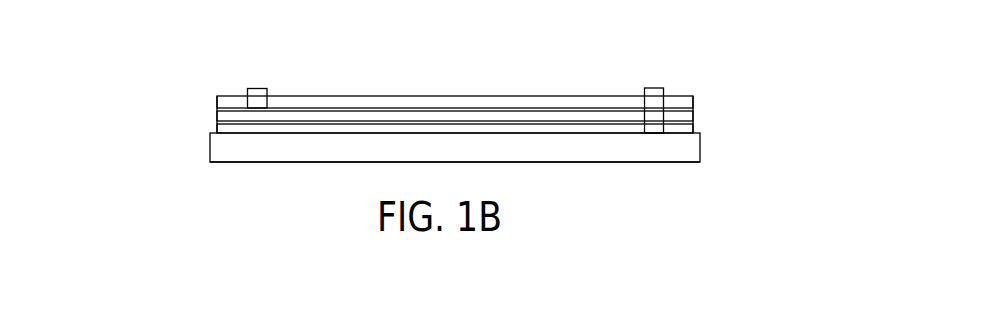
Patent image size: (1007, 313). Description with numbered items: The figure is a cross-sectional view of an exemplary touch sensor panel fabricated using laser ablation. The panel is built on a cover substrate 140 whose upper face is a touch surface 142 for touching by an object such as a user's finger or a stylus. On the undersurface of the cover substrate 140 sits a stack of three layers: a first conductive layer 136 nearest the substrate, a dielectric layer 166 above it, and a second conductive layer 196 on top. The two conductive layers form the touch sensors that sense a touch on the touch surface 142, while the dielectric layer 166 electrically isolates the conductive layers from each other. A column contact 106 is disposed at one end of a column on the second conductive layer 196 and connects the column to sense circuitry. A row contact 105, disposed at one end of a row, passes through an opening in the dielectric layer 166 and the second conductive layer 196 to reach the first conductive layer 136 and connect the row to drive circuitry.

The row contact 105 is at (655, 87).
The column contact 106 is at (258, 87).
The first conductive layer 136 is at (228, 128).
The cover substrate 140 is at (690, 147).
The touch surface 142 is at (627, 163).
The dielectric layer 166 is at (228, 117).
The second conductive layer 196 is at (685, 102).